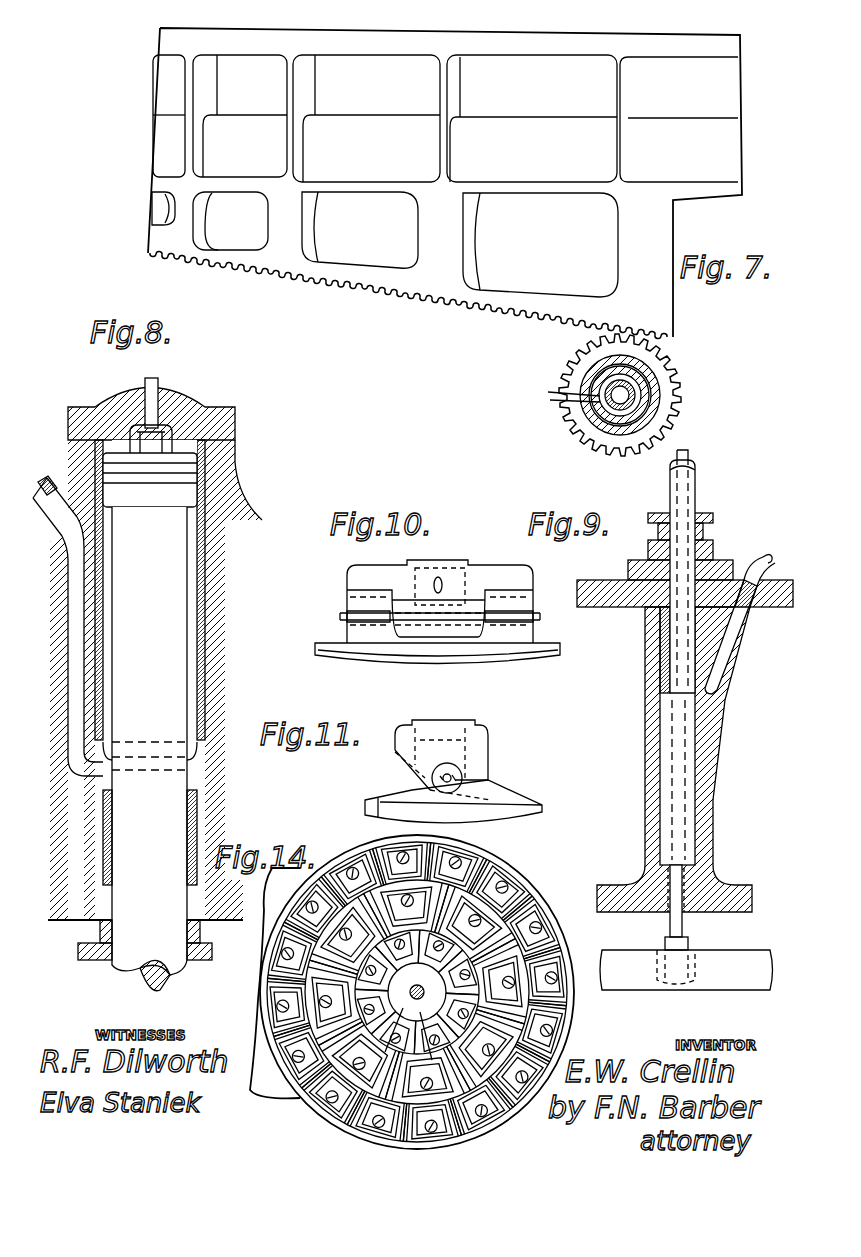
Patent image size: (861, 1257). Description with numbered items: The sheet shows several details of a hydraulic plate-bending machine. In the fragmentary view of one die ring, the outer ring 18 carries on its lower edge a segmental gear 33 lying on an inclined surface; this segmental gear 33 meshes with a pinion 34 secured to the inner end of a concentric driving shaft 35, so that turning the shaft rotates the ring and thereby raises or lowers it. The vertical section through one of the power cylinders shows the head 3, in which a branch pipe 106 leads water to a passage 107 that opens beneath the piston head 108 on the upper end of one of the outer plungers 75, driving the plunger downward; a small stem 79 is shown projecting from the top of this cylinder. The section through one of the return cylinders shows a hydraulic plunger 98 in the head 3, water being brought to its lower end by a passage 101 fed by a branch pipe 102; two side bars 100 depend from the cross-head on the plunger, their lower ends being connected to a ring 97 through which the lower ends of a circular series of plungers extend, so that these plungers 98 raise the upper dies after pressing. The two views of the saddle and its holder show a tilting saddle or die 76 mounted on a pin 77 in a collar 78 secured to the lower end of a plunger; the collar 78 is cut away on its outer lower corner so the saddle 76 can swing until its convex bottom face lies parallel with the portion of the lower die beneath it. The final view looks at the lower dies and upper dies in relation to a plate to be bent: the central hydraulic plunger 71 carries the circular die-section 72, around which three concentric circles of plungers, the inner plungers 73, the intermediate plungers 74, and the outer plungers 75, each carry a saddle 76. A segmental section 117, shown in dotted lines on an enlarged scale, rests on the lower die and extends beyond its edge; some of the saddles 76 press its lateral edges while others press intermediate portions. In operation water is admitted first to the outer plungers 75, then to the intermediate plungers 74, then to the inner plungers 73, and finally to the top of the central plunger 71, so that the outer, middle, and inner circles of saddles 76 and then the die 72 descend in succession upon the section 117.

In FIG. 7, the ring 18 is at (445, 182).
In FIG. 7, the segmental gear 33 is at (408, 298).
In FIG. 7, the pinion 34 is at (578, 372).
In FIG. 7, the driving shaft 35 is at (583, 395).
In FIG. 8, the valve stem 79 is at (160, 380).
In FIG. 8, the branch pipe 106 is at (46, 492).
In FIG. 8, the head 3 is at (262, 520).
In FIG. 9, the head 3 is at (592, 580).
In FIG. 8, the piston head 108 is at (158, 500).
In FIG. 8, the passage 107 is at (85, 648).
In FIG. 8, the central hydraulic plunger 71 is at (145, 749).
In FIG. 14, the central hydraulic plunger 71 is at (430, 992).
In FIG. 9, the hydraulic plunger 98 is at (695, 492).
In FIG. 9, the branch pipe 102 is at (770, 553).
In FIG. 9, the passage 101 is at (730, 652).
In FIG. 9, the side bar 100 is at (683, 928).
In FIG. 9, the ring 97 is at (686, 970).
In FIG. 10, the collar 78 is at (480, 570).
In FIG. 11, the collar 78 is at (488, 735).
In FIG. 10, the pin 77 is at (540, 617).
In FIG. 11, the pin 77 is at (450, 777).
In FIG. 10, the tilting saddle 76 is at (437, 660).
In FIG. 11, the tilting saddle 76 is at (548, 800).
In FIG. 14, the tilting saddle 76 is at (523, 873).
In FIG. 14, the plunger of the outer series 75 is at (552, 990).
In FIG. 14, the plunger of the inner series 73 is at (440, 948).
In FIG. 14, the circular die-section 72 is at (417, 992).
In FIG. 14, the plunger of the intermediate series 74 is at (408, 1029).
In FIG. 14, the segmental section 117 is at (258, 1012).